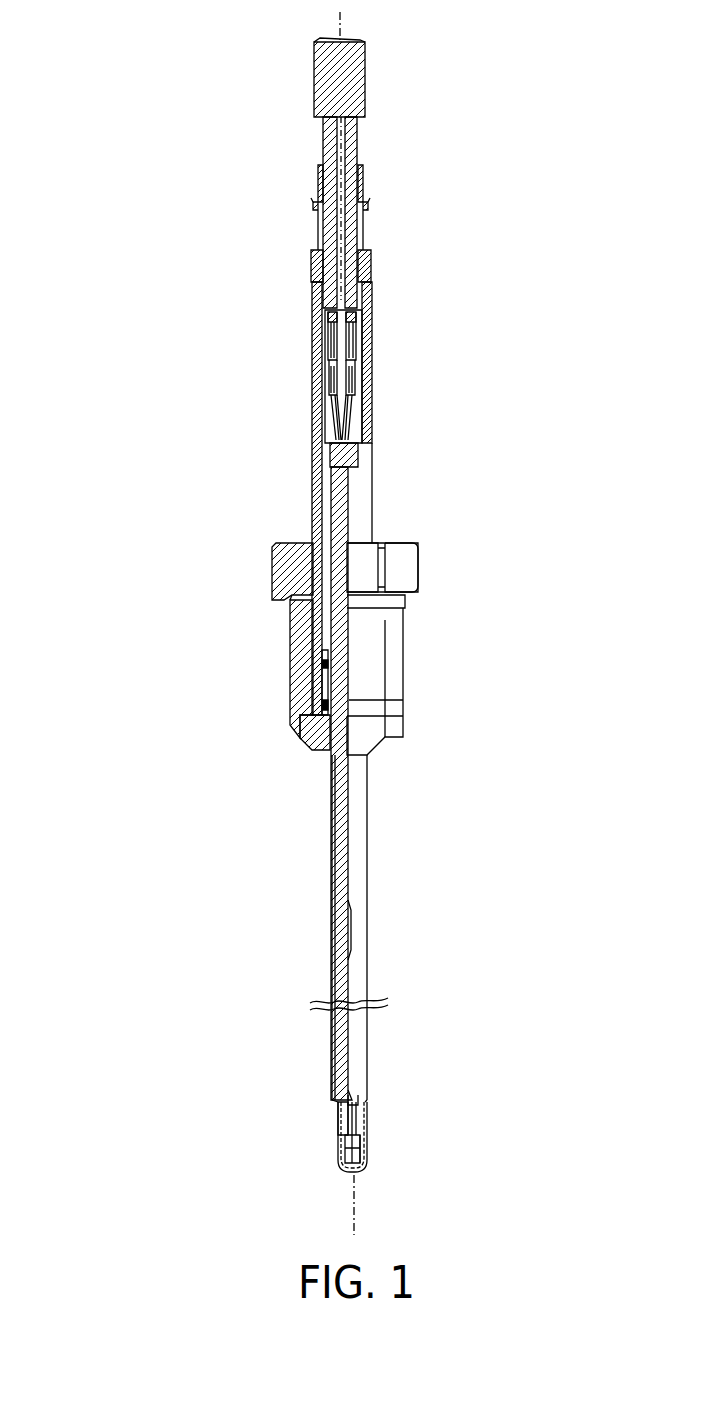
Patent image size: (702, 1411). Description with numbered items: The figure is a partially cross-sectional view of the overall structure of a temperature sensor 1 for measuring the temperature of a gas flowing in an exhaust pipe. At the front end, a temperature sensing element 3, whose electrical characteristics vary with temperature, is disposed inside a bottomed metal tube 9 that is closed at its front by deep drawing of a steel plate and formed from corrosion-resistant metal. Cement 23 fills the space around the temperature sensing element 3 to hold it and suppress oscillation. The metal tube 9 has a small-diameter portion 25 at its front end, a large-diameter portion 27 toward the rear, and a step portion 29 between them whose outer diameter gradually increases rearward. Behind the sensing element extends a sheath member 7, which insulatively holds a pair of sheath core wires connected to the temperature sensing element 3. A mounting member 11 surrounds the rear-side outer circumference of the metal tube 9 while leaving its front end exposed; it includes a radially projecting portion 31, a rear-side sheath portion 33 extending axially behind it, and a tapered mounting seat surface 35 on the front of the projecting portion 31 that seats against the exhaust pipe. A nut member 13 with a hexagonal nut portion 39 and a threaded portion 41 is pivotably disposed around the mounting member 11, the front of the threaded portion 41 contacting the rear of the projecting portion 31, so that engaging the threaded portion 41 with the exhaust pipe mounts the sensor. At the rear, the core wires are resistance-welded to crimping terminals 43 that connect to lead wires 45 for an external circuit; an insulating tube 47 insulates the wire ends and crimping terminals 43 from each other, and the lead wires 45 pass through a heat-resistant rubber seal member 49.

The temperature sensor 1 is at (134, 189).
The temperature sensing element 3 is at (340, 1160).
The sheath member 7 is at (336, 921).
The metal tube 9 is at (360, 854).
The mounting member 11 is at (196, 663).
The nut member 13 is at (494, 542).
The cement 23 is at (346, 1144).
The small-diameter portion 25 is at (362, 1140).
The large-diameter portion 27 is at (367, 1050).
The step portion 29 is at (362, 1108).
The projecting portion 31 is at (313, 733).
The rear-side sheath portion 33 is at (318, 684).
The mounting seat surface 35 is at (315, 748).
The hexagonal nut portion 39 is at (418, 556).
The threaded portion 41 is at (405, 617).
The crimping terminals 43 is at (328, 350).
The lead wires 45 is at (323, 125).
The insulating tube 47 is at (355, 380).
The seal member 49 is at (363, 184).